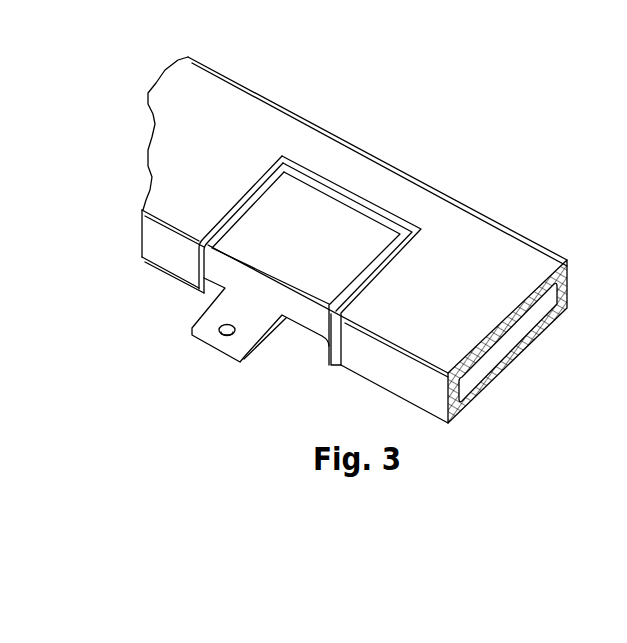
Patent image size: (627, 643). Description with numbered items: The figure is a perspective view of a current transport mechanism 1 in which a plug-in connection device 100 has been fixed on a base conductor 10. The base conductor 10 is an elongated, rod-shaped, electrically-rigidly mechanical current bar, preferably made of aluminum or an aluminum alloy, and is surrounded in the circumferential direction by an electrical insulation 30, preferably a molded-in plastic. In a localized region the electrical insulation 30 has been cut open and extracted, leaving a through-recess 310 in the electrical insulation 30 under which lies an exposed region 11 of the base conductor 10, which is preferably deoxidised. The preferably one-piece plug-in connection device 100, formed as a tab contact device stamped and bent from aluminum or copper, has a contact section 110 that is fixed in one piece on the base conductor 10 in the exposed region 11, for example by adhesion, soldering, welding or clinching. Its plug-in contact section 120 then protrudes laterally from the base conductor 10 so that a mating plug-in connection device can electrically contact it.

The current transport mechanism 1 is at (436, 44).
The base conductor 10 is at (507, 350).
The exposed region 11 is at (338, 197).
The electrical insulation 30 is at (221, 116).
The plug-in connection device 100 is at (233, 222).
The contact section 110 is at (352, 240).
The plug-in contact section 120 is at (250, 326).
The through-recess 310 is at (308, 167).